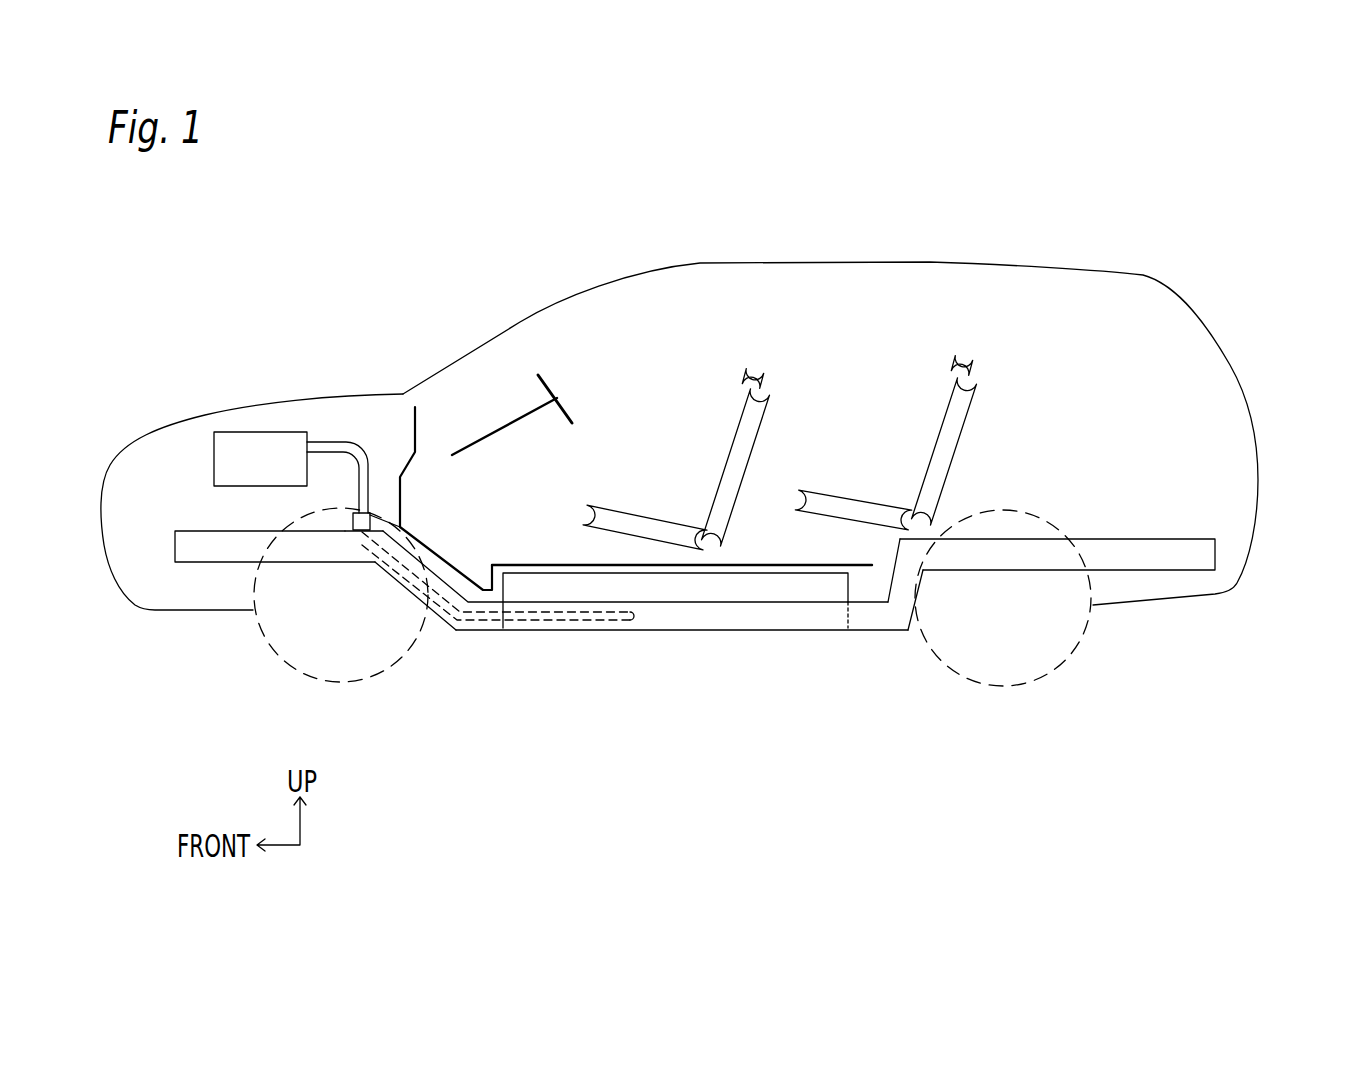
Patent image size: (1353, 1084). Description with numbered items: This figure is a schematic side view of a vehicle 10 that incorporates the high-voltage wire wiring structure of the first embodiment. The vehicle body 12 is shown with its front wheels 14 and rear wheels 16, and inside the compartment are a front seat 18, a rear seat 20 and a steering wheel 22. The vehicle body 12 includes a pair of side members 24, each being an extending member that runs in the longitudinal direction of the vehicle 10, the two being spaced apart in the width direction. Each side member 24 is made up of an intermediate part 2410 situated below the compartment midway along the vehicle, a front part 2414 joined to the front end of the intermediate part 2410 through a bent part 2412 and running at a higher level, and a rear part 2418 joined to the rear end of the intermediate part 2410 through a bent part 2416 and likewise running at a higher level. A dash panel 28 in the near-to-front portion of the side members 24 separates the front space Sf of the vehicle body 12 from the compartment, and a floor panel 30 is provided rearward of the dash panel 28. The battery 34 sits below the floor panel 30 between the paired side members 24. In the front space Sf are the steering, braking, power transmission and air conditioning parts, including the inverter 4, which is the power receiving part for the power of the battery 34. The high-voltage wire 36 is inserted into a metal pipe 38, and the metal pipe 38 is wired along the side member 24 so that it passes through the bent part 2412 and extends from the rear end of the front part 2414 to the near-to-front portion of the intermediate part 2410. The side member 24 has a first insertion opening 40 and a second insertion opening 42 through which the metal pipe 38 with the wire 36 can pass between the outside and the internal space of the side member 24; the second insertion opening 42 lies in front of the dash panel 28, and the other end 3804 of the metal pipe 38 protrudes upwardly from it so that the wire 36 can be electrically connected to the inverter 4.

The vehicle 10 is at (628, 228).
The vehicle body 12 is at (786, 249).
The front wheels 14 is at (322, 680).
The rear wheels 16 is at (1070, 660).
The front seat 18 is at (742, 413).
The rear seat 20 is at (945, 403).
The steering wheel 22 is at (547, 377).
The side member 24 is at (765, 644).
The intermediate part 2410 is at (682, 632).
The bent part 2412 is at (400, 587).
The front part 2414 is at (200, 562).
The bent part 2416 is at (920, 575).
The rear part 2418 is at (1157, 572).
The dash panel 28 is at (418, 423).
The floor panel 30 is at (760, 563).
The battery 34 is at (787, 588).
The high-voltage wire 36 is at (363, 470).
The metal pipe 38 is at (580, 620).
The first insertion opening 40 is at (642, 615).
The second insertion opening 42 is at (345, 533).
The inverter 4 is at (252, 430).
The other end of the metal pipe 3804 is at (353, 513).
The front space Sf is at (222, 520).